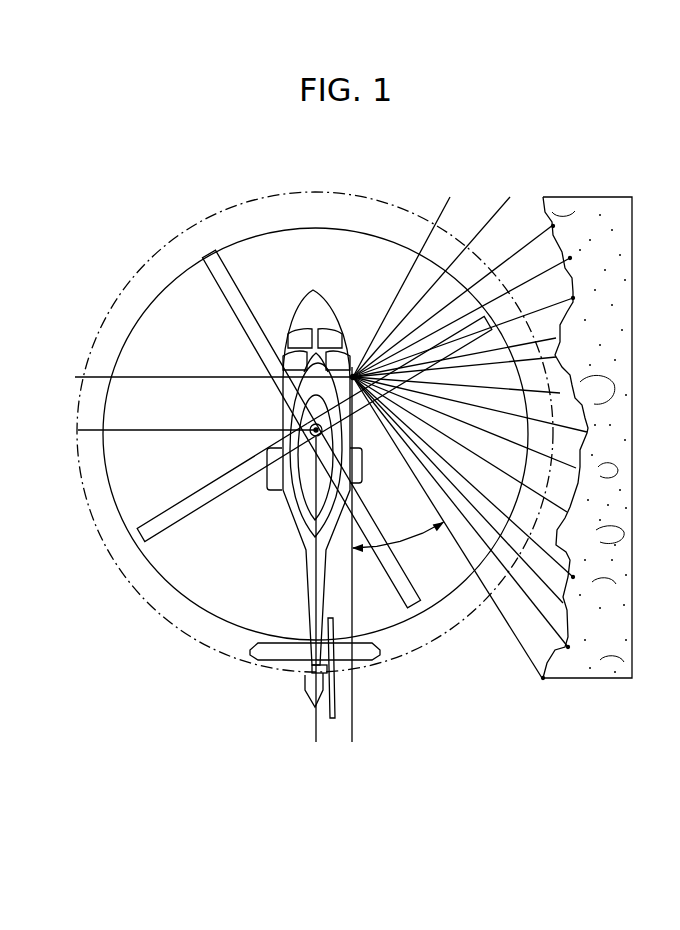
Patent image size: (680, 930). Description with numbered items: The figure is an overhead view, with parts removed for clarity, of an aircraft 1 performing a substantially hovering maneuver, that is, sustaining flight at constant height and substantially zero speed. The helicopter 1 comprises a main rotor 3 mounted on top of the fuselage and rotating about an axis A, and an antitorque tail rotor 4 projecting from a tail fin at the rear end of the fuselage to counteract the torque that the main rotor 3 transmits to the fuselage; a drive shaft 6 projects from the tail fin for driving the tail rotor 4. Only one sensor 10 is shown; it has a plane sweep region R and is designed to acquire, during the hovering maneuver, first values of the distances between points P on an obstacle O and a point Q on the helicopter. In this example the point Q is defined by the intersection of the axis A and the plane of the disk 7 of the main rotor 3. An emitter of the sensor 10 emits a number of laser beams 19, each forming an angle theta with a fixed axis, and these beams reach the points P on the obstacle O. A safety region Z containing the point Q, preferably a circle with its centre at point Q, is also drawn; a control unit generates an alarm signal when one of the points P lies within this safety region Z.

The aircraft 1 is at (288, 266).
The main rotor 3 is at (307, 264).
The antitorque tail rotor 4 is at (333, 707).
The drive shaft 6 is at (322, 678).
The disk 7 is at (130, 331).
The sensor 10 is at (354, 372).
The laser beams 19 is at (470, 447).
The safety region Z is at (143, 262).
The axis A is at (311, 420).
The point Q is at (278, 486).
The plane sweep region R is at (456, 540).
The obstacle O is at (558, 602).
The points P is at (556, 225).